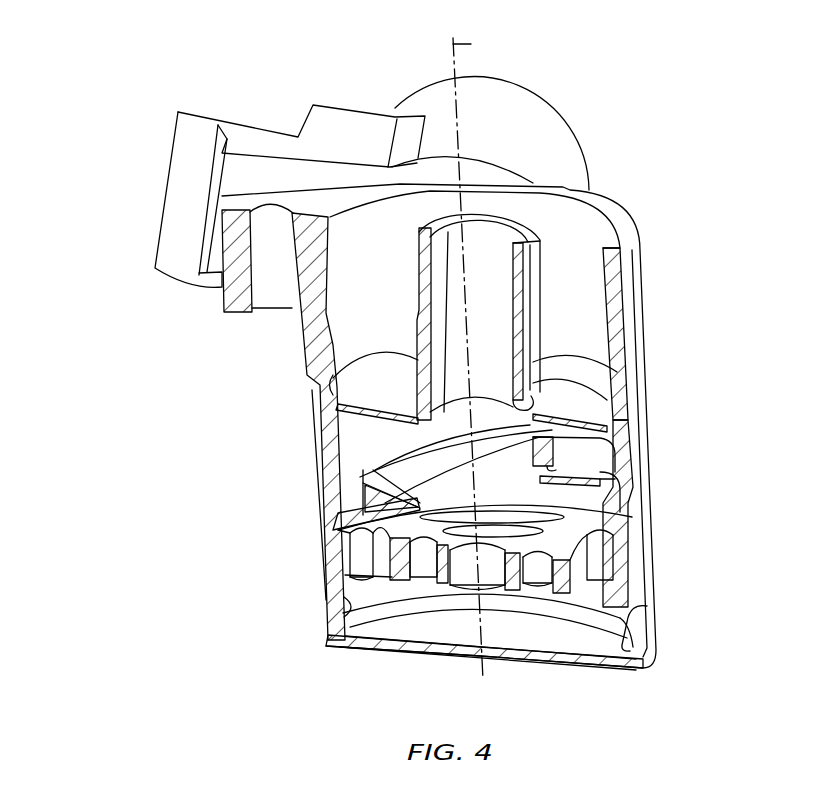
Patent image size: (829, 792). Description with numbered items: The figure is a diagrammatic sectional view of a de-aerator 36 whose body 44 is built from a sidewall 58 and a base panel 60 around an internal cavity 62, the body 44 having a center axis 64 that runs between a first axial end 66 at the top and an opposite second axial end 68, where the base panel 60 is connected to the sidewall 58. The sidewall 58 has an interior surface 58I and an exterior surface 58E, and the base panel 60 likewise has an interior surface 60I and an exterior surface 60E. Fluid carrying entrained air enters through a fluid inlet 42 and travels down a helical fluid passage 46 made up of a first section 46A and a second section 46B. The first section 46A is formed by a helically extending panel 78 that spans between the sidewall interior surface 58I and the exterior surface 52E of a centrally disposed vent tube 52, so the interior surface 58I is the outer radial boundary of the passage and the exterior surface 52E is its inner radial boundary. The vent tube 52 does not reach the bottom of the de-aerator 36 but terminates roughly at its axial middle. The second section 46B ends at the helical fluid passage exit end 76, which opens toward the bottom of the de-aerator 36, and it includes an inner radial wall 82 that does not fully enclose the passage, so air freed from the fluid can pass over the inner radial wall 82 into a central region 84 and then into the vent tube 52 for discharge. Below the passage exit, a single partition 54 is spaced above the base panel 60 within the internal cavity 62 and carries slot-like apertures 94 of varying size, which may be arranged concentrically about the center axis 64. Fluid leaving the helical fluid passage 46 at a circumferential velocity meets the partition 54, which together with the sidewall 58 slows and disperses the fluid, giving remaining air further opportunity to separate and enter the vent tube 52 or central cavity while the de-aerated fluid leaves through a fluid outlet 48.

The de-aerator 36 is at (684, 123).
The fluid inlet 42 is at (156, 195).
The body 44 is at (663, 584).
The helical fluid passage 46 is at (473, 415).
The first section 46A is at (650, 223).
The second section 46B is at (652, 425).
The fluid outlet 48 is at (640, 631).
The vent tube 52 is at (539, 282).
The exterior surface of the vent tube 52E is at (533, 250).
The partition 54 is at (593, 517).
The sidewall 58 is at (424, 515).
The exterior surface of the sidewall 58E is at (323, 561).
The interior surface of the sidewall 58I is at (346, 616).
The base panel 60 is at (488, 684).
The exterior surface of the base panel 60E is at (560, 645).
The interior surface of the base panel 60I is at (582, 645).
The internal cavity 62 is at (345, 513).
The center axis 64 is at (476, 43).
The first axial end 66 is at (639, 144).
The second axial end 68 is at (464, 703).
The helical fluid passage exit end 76 is at (409, 470).
The helically extending panel 78 is at (317, 398).
The inner radial wall 82 is at (494, 470).
The central region 84 is at (453, 428).
The apertures 94 is at (592, 540).